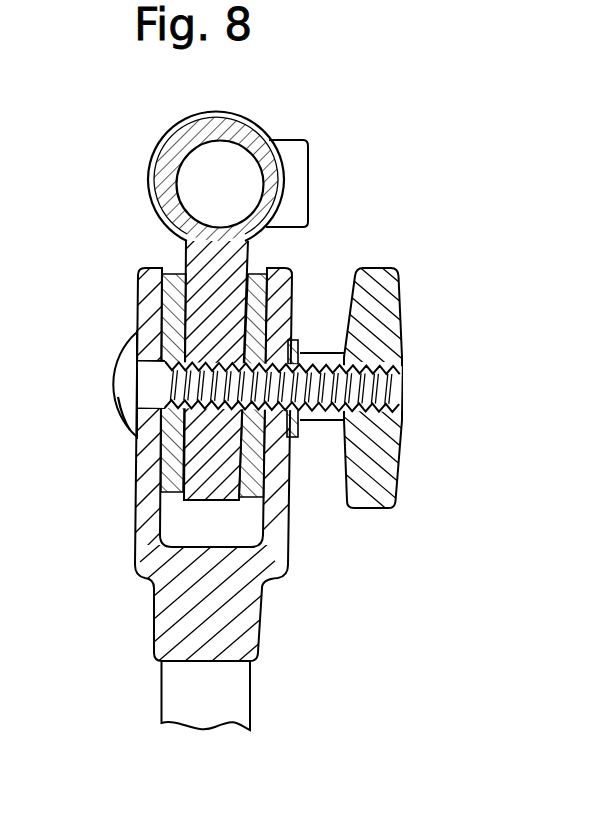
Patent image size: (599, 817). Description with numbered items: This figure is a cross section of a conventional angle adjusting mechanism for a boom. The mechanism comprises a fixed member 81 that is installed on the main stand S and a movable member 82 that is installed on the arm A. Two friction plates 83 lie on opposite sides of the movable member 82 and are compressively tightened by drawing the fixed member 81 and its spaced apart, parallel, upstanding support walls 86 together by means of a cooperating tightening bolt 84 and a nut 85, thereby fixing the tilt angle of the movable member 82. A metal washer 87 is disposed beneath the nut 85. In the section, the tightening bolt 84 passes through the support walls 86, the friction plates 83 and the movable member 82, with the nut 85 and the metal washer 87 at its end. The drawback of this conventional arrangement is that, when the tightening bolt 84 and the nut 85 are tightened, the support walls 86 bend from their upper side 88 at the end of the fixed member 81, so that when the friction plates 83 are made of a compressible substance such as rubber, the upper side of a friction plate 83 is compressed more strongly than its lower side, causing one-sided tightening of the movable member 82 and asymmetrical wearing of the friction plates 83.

The fixed member 81 is at (233, 638).
The movable member 82 is at (222, 300).
The friction plates 83 is at (178, 282).
The tightening bolt 84 is at (128, 380).
The nut 85 is at (380, 330).
The support walls 86 is at (280, 480).
The metal washer 87 is at (297, 428).
The upper side 88 is at (155, 282).
The arm A is at (232, 157).
The main stand S is at (228, 706).